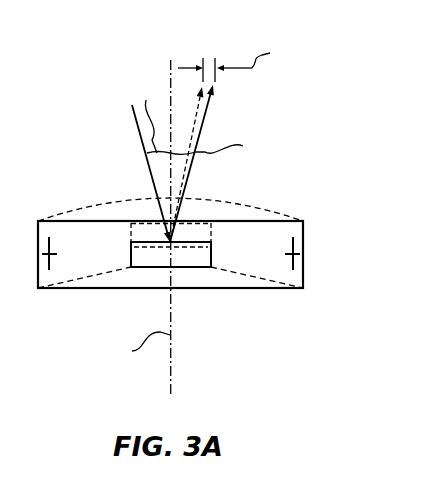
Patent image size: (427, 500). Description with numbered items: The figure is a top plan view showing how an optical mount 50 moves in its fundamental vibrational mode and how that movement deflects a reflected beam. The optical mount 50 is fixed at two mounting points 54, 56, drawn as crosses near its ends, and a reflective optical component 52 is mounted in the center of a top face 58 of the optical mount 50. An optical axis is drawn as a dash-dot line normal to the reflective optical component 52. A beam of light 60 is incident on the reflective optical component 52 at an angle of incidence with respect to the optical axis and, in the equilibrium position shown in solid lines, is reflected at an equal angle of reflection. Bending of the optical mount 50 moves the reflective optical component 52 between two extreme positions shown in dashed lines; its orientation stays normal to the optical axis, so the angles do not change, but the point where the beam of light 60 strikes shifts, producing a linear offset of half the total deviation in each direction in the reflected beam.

The optical mount 50 is at (55, 79).
The reflective optical component 52 is at (212, 253).
The mounting point 54 is at (38, 250).
The mounting point 56 is at (300, 250).
The top face 58 is at (100, 264).
The beam of light 60 is at (138, 133).